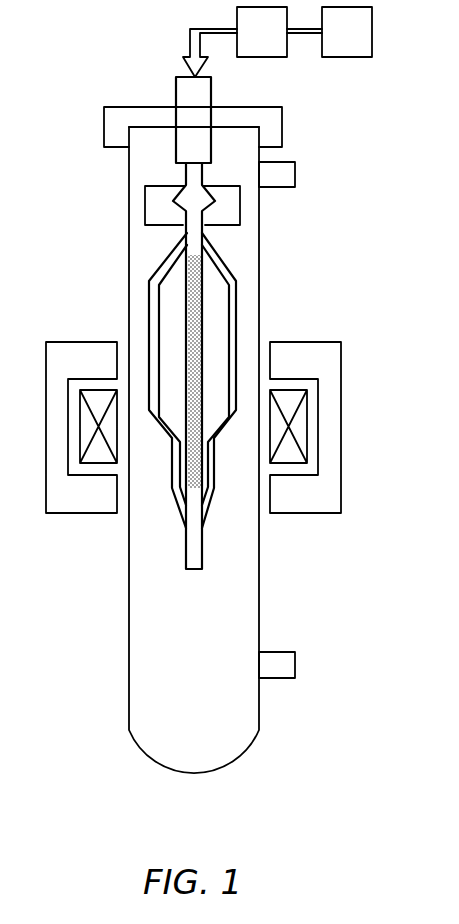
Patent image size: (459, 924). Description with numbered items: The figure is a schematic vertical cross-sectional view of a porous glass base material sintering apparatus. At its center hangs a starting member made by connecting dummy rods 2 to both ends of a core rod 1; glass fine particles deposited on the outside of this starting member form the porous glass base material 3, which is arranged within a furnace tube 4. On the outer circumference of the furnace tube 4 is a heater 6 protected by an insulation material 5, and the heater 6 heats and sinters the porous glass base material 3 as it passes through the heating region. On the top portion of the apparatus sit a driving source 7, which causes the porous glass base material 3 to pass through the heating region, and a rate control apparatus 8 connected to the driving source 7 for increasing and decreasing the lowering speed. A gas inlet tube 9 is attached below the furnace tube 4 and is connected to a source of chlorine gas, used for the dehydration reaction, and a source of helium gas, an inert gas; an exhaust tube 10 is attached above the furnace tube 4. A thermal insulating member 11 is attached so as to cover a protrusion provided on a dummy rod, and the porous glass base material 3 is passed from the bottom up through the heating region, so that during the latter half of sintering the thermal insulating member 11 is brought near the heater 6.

The core rod 1 is at (187, 317).
The dummy rods 2 is at (185, 550).
The porous glass base material 3 is at (205, 315).
The furnace tube 4 is at (259, 567).
The insulation material 5 is at (341, 370).
The heater 6 is at (307, 447).
The driving source 7 is at (235, 42).
The rate control apparatus 8 is at (329, 32).
The gas inlet tube 9 is at (295, 665).
The exhaust tube 10 is at (295, 175).
The thermal insulating member 11 is at (145, 207).